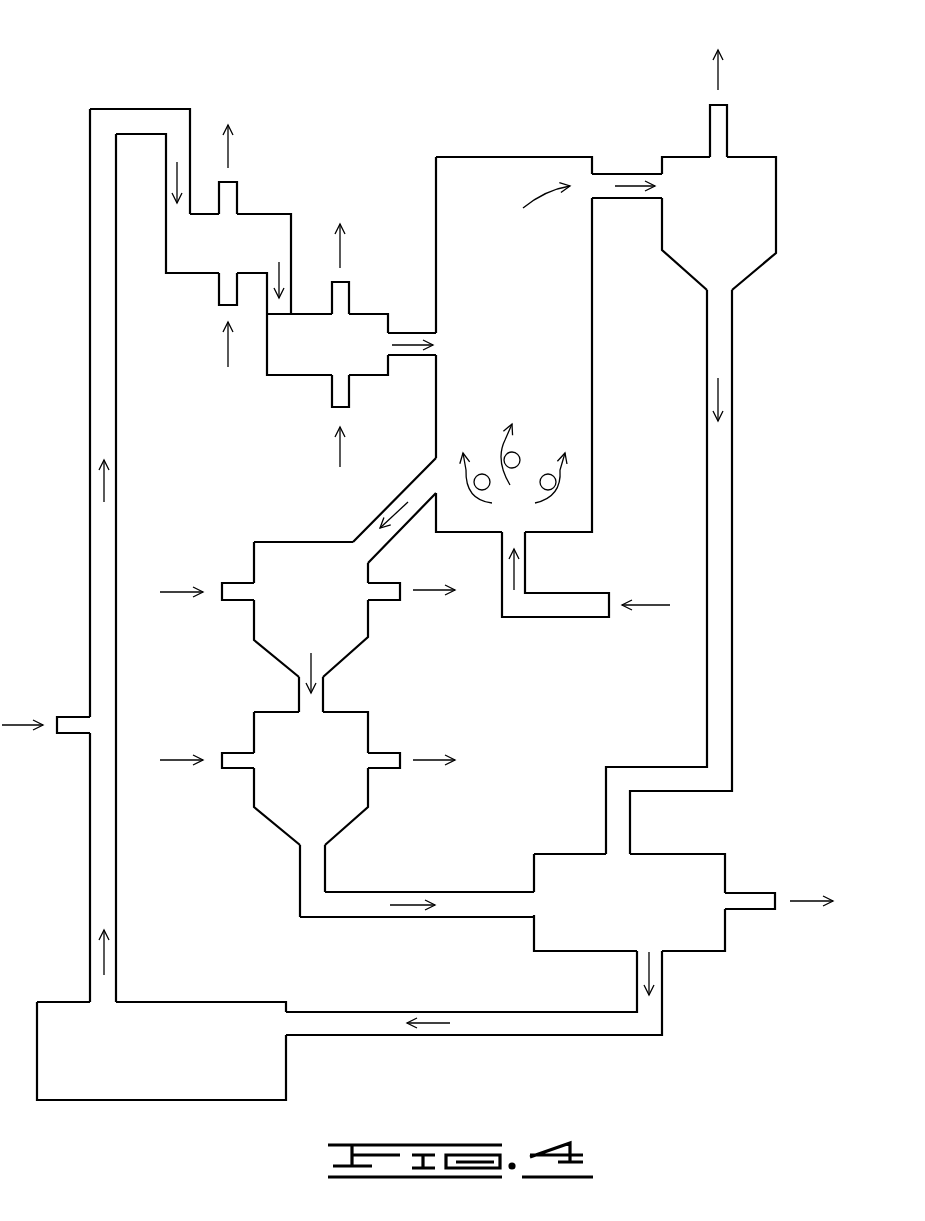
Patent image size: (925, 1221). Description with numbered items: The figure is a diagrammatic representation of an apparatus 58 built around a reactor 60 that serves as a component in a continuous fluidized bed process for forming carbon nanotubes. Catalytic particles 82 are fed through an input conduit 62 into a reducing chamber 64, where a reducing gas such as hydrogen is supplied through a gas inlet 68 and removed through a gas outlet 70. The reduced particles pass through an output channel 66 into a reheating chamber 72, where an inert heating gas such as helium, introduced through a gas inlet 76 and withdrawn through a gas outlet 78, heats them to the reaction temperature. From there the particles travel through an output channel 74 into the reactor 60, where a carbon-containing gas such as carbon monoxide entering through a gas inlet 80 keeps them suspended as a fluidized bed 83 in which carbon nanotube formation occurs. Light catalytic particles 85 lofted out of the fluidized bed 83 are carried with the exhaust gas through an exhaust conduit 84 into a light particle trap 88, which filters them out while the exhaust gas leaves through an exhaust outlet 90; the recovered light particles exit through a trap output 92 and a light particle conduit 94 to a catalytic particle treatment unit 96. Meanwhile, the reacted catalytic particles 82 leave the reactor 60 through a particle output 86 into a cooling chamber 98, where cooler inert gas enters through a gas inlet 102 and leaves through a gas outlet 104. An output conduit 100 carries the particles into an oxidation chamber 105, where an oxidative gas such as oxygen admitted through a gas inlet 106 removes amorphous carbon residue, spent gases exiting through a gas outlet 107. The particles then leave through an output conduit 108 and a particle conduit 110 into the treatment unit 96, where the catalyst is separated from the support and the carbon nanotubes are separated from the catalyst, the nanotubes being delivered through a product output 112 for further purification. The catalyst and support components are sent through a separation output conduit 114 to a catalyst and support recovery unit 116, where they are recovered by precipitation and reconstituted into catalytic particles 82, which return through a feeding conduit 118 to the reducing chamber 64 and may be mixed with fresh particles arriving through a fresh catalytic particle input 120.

The apparatus 58 is at (545, 66).
The reactor 60 is at (503, 157).
The input conduit 62 is at (192, 139).
The reducing chamber 64 is at (277, 212).
The output channel 66 is at (267, 357).
The gas inlet 68 is at (217, 293).
The gas outlet 70 is at (237, 200).
The reheating chamber 72 is at (310, 375).
The output channel 74 is at (417, 332).
The gas inlet 76 is at (350, 392).
The gas outlet 78 is at (350, 292).
The gas inlet 80 is at (567, 618).
The catalytic particles 82 is at (478, 232).
The fluidized bed 83 is at (530, 353).
The exhaust conduit 84 is at (628, 174).
The light catalytic particles 85 is at (730, 193).
The particle output 86 is at (385, 512).
The light particle trap 88 is at (776, 230).
The exhaust outlet 90 is at (730, 125).
The trap output 92 is at (732, 340).
The light particle conduit 94 is at (732, 600).
The catalytic particle treatment unit 96 is at (680, 854).
The cooling chamber 98 is at (280, 542).
The output conduit 100 is at (327, 700).
The gas inlet 102 is at (232, 583).
The gas outlet 104 is at (383, 600).
The oxidation chamber 105 is at (368, 735).
The gas inlet 106 is at (240, 770).
The gas outlet 107 is at (383, 770).
The output conduit 108 is at (300, 873).
The particle conduit 110 is at (410, 892).
The product output 112 is at (752, 909).
The separation output conduit 114 is at (556, 1037).
The catalyst and support recovery unit 116 is at (180, 1002).
The feeding conduit 118 is at (90, 398).
The fresh catalytic particle input 120 is at (69, 717).